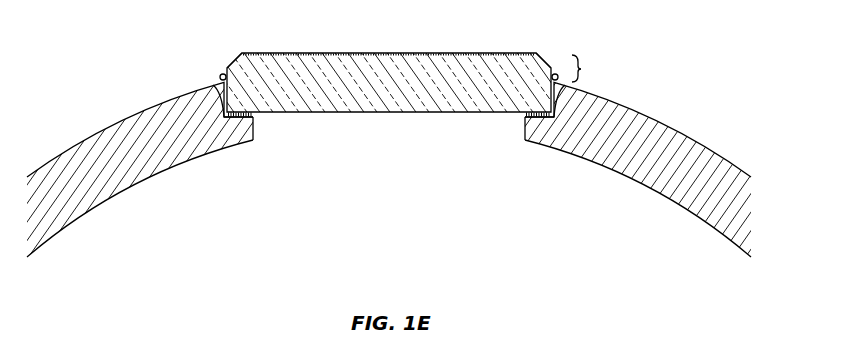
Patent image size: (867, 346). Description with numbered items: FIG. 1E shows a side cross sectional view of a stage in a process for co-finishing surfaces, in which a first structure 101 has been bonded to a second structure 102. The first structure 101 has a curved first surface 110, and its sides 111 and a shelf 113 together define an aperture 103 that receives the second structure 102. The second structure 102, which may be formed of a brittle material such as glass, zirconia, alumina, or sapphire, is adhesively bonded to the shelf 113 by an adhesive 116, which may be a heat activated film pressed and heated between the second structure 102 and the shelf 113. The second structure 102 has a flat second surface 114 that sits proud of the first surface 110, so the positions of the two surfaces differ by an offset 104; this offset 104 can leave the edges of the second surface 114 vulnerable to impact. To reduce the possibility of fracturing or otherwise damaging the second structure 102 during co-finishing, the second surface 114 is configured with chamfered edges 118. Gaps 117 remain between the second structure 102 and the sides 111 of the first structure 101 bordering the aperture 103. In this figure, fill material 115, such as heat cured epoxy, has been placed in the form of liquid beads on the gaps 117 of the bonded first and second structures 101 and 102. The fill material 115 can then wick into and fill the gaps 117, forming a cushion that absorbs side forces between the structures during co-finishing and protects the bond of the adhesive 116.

The first structure 101 is at (80, 221).
The second structure 102 is at (434, 116).
The aperture 103 is at (345, 140).
The offset 104 is at (594, 68).
The first surface 110 is at (153, 107).
The sides 111 is at (216, 84).
The shelf 113 is at (251, 142).
The second surface 114 is at (453, 52).
The fill material 115 is at (222, 74).
The adhesive 116 is at (254, 116).
The gaps 117 is at (224, 119).
The chamfered edges 118 is at (233, 62).